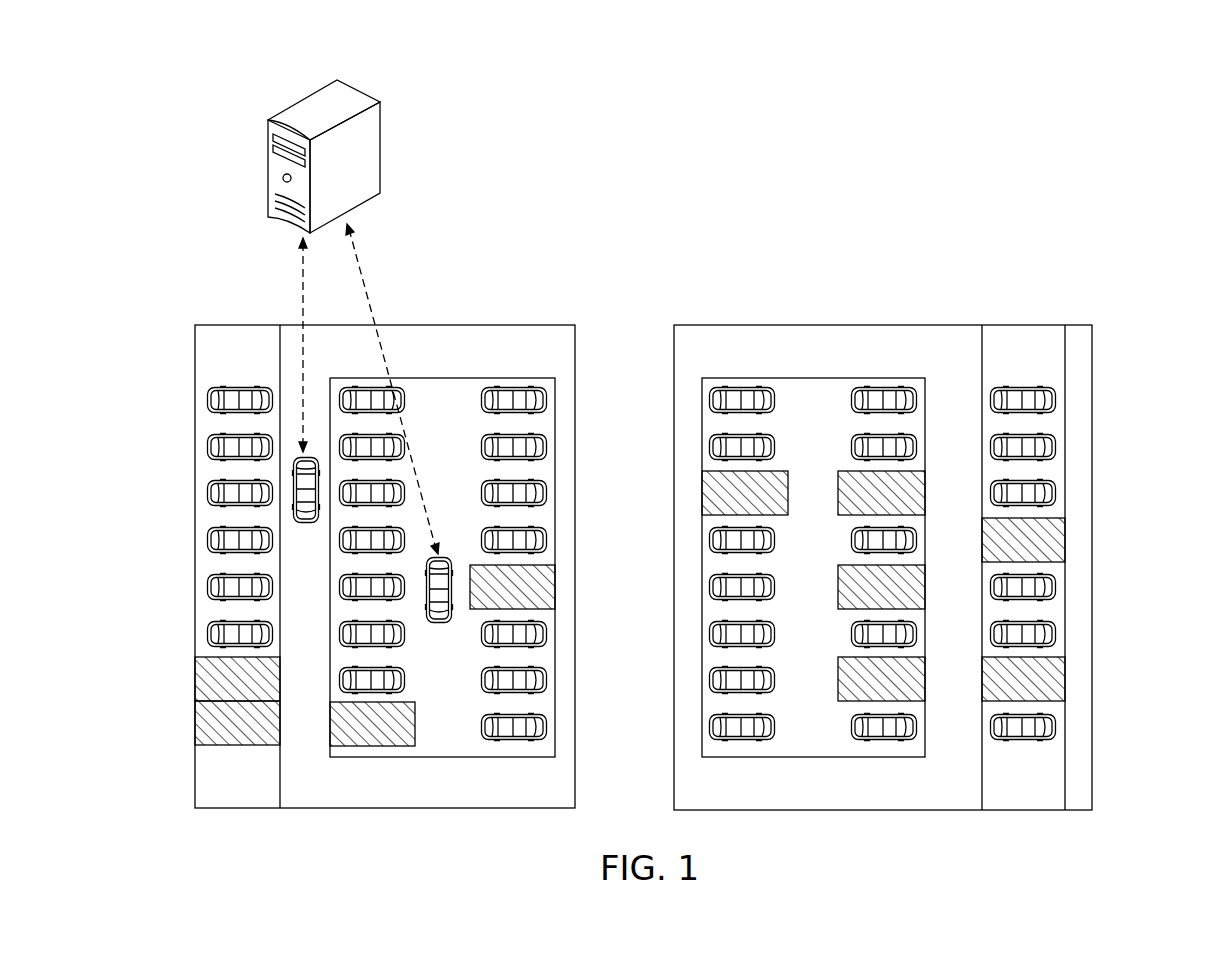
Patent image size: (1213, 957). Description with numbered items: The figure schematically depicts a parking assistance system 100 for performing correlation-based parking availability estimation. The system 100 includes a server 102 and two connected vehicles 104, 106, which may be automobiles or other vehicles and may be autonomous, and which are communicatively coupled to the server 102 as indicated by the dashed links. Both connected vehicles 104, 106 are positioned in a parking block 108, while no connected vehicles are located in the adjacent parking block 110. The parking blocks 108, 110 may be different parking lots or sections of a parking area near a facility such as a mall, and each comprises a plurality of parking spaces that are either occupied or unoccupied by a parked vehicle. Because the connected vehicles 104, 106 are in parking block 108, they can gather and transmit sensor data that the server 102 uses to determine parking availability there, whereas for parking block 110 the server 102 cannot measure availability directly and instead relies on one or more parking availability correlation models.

The parking assistance system 100 is at (102, 143).
The server 102 is at (356, 90).
The connected vehicle 104 is at (313, 525).
The connected vehicle 106 is at (443, 625).
The parking block 108 is at (165, 357).
The parking block 110 is at (1127, 350).